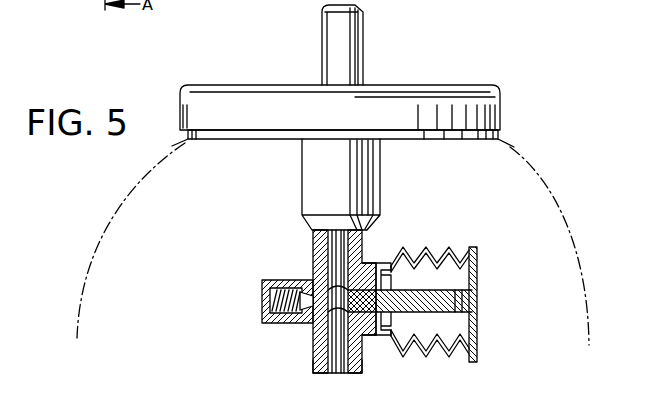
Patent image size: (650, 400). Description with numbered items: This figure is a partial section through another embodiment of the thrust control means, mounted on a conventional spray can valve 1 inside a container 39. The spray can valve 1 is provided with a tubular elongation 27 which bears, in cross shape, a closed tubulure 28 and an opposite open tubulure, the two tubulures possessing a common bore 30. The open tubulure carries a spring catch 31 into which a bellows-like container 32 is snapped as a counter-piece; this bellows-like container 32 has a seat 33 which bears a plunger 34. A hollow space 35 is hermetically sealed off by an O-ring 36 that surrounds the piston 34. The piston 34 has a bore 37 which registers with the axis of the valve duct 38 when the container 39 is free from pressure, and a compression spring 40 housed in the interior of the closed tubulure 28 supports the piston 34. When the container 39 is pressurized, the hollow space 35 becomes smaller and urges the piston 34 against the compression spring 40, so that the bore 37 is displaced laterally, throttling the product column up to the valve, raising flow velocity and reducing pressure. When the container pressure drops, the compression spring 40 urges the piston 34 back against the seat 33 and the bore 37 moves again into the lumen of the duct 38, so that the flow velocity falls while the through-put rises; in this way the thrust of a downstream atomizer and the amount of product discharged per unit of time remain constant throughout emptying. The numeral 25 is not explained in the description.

The spray can valve 1 is at (348, 156).
The valve body flange 25 is at (373, 262).
The tubular elongation 27 is at (318, 252).
The closed tubulure 28 is at (262, 316).
The common bore 30 is at (344, 290).
The spring catch 31 is at (372, 278).
The bellows-like container 32 is at (471, 246).
The seat 33 is at (478, 299).
The plunger 34 is at (452, 308).
The hollow space 35 is at (470, 273).
The O-ring 36 is at (371, 325).
The bore 37 is at (337, 298).
The valve duct 38 is at (340, 357).
The container 39 is at (557, 193).
The compression spring 40 is at (262, 294).